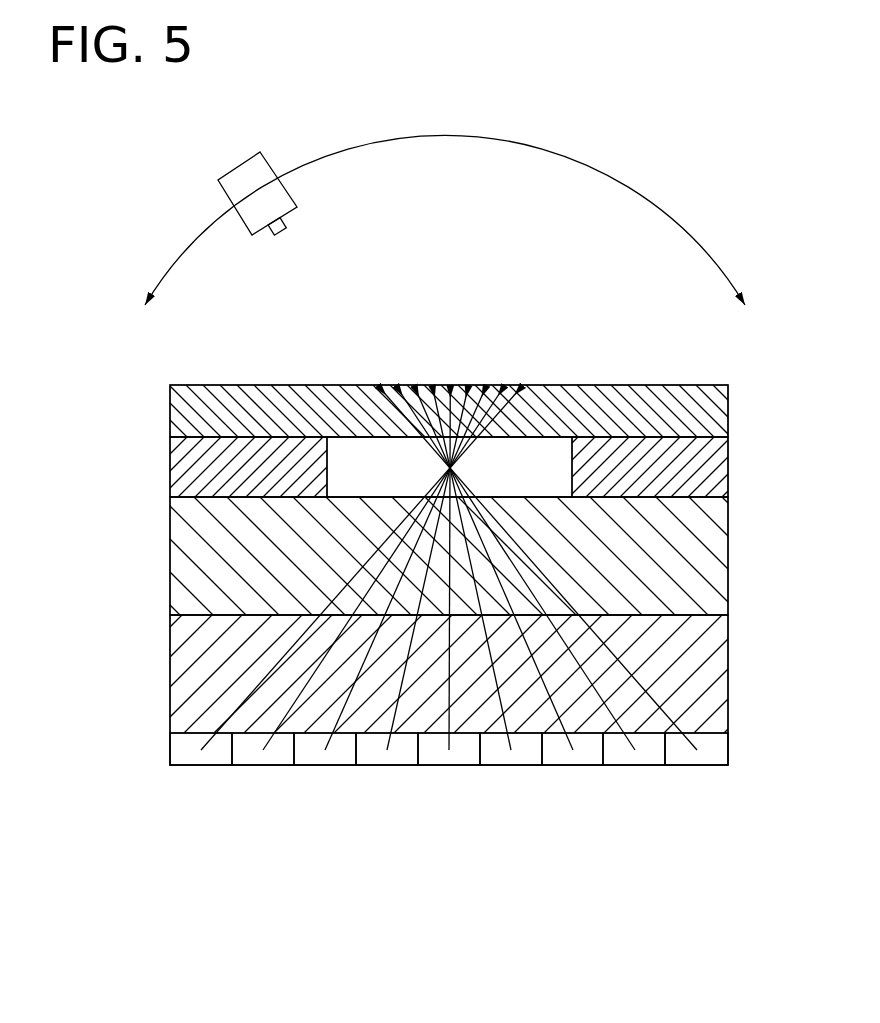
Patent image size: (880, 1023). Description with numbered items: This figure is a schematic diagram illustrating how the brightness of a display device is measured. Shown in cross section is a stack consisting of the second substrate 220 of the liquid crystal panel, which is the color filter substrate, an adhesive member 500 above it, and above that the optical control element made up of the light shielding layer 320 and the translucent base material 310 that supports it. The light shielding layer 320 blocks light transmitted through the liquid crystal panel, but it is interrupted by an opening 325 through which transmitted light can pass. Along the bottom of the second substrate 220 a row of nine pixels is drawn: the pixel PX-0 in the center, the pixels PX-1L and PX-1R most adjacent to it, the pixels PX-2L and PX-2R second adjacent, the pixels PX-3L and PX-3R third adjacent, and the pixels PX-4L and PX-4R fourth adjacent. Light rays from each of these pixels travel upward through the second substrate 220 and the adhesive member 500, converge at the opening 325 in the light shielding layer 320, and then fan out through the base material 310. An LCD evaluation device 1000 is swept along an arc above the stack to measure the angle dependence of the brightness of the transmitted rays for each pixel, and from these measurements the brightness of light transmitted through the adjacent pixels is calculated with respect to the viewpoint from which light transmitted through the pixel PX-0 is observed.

The LCD evaluation device 1000 is at (256, 192).
The base material 310 is at (178, 418).
The light shielding layer 320 is at (178, 472).
The opening 325 is at (507, 475).
The adhesive member 500 is at (176, 547).
The second substrate 220 is at (148, 613).
The pixel PX-4L is at (197, 766).
The pixel PX-3L is at (258, 766).
The pixel PX-2L is at (320, 766).
The pixel PX-1L is at (383, 766).
The pixel PX-0 is at (446, 766).
The pixel PX-1R is at (508, 766).
The pixel PX-2R is at (570, 766).
The pixel PX-3R is at (632, 766).
The pixel PX-4R is at (694, 766).